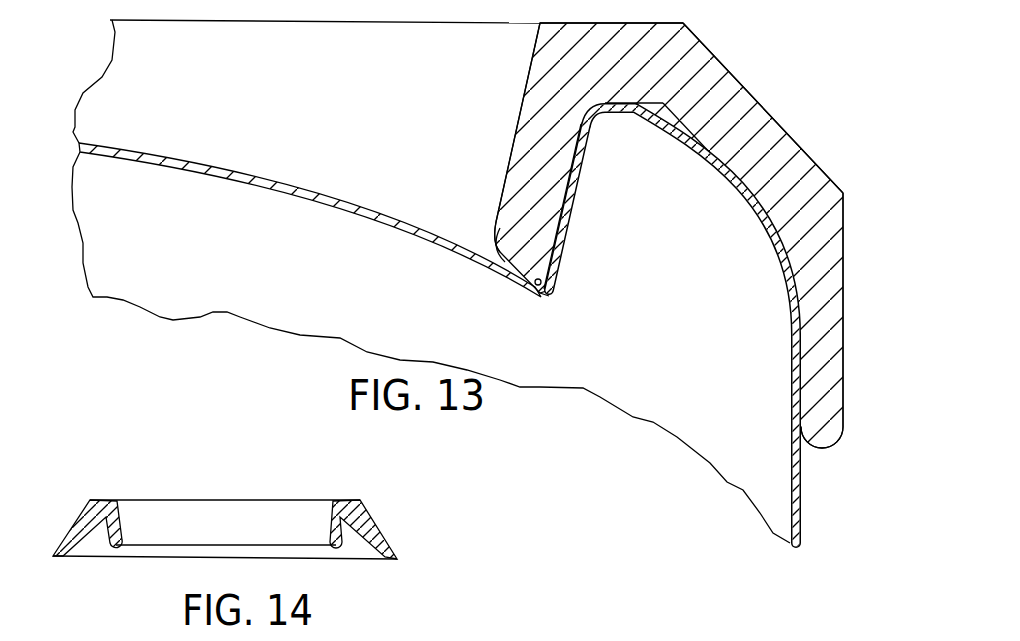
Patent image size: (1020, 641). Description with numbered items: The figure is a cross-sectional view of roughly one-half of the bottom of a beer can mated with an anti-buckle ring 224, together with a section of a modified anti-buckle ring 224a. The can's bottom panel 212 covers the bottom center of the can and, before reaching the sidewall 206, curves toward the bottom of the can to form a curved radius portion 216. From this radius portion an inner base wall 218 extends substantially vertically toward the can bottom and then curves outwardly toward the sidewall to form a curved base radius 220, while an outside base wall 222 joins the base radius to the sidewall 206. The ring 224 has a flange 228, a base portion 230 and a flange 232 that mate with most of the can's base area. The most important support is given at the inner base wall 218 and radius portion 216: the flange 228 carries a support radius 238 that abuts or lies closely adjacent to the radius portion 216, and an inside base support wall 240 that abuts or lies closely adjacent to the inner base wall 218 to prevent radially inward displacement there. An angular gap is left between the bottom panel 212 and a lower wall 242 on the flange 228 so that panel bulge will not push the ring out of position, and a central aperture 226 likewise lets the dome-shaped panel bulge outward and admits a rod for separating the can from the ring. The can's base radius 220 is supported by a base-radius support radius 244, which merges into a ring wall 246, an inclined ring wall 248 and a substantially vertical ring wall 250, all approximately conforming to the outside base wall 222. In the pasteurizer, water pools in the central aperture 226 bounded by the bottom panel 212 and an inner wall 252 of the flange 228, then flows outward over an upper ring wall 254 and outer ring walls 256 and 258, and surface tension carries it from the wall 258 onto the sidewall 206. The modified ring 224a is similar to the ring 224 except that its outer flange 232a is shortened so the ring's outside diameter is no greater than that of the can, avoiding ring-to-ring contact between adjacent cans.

In FIG. 13, the sidewall 206 is at (790, 493).
In FIG. 13, the bottom panel 212 is at (333, 212).
In FIG. 13, the curved radius portion 216 is at (546, 298).
In FIG. 13, the inner base wall 218 is at (571, 224).
In FIG. 13, the curved base radius 220 is at (607, 112).
In FIG. 13, the outside base wall 222 is at (755, 220).
In FIG. 13, the anti-buckle ring 224 is at (835, 165).
In FIG. 13, the central aperture 226 is at (280, 106).
In FIG. 13, the flange 228 is at (530, 150).
In FIG. 13, the base portion 230 is at (660, 38).
In FIG. 13, the flange 232 is at (753, 125).
In FIG. 13, the support radius 238 is at (556, 281).
In FIG. 13, the inside base support wall 240 is at (553, 185).
In FIG. 13, the lower wall 242 is at (496, 228).
In FIG. 13, the base-radius support radius 244 is at (588, 108).
In FIG. 13, the ring wall 246 is at (668, 96).
In FIG. 13, the inclined ring wall 248 is at (698, 136).
In FIG. 13, the substantially vertical ring wall 250 is at (803, 390).
In FIG. 13, the inner wall 252 is at (522, 120).
In FIG. 13, the upper ring wall 254 is at (670, 22).
In FIG. 13, the outer ring wall 256 is at (753, 97).
In FIG. 13, the outer ring wall 258 is at (878, 318).
In FIG. 14, the modified anti-buckle ring 224a is at (424, 534).
In FIG. 14, the outer flange 232a is at (384, 522).